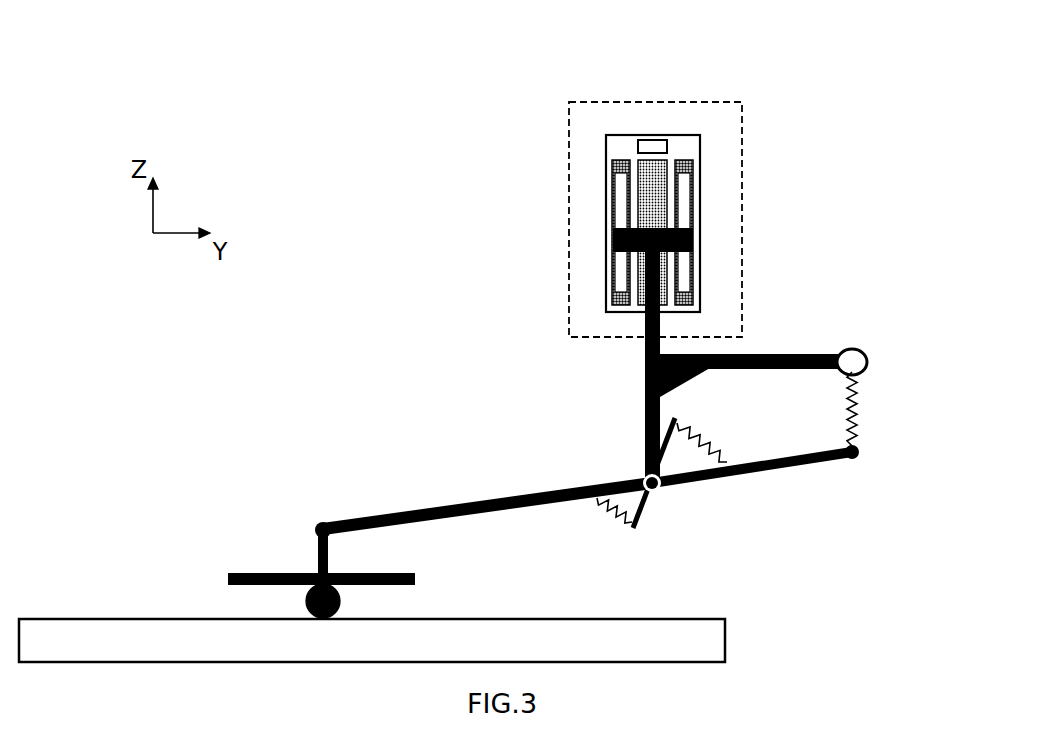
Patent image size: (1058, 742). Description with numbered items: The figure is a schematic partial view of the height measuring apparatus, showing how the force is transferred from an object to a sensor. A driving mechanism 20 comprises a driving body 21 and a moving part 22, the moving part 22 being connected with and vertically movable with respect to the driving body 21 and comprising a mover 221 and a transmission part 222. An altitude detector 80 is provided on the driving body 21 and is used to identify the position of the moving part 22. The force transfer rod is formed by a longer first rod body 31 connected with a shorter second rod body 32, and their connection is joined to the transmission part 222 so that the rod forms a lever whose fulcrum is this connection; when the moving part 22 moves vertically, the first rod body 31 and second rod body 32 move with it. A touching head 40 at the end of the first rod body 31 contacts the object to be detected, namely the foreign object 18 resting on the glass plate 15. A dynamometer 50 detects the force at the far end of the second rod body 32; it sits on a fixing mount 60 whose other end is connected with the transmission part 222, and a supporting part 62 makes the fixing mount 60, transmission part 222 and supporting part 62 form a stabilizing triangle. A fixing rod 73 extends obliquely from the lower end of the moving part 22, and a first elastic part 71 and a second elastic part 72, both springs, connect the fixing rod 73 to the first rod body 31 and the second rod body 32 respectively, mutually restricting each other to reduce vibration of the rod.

The glass plate 15 is at (100, 640).
The foreign object 18 is at (343, 600).
The driving mechanism 20 is at (429, 212).
The driving body 21 is at (569, 187).
The moving part 22 is at (560, 356).
The mover 221 is at (623, 252).
The transmission part 222 is at (645, 349).
The first rod body 31 is at (442, 507).
The second rod body 32 is at (800, 468).
The touching head 40 is at (260, 572).
The dynamometer 50 is at (862, 347).
The fixing mount 60 is at (773, 355).
The supporting part 62 is at (685, 385).
The first elastic part 71 is at (605, 513).
The second elastic part 72 is at (727, 460).
The fixing rod 73 is at (643, 515).
The altitude detector 80 is at (657, 148).